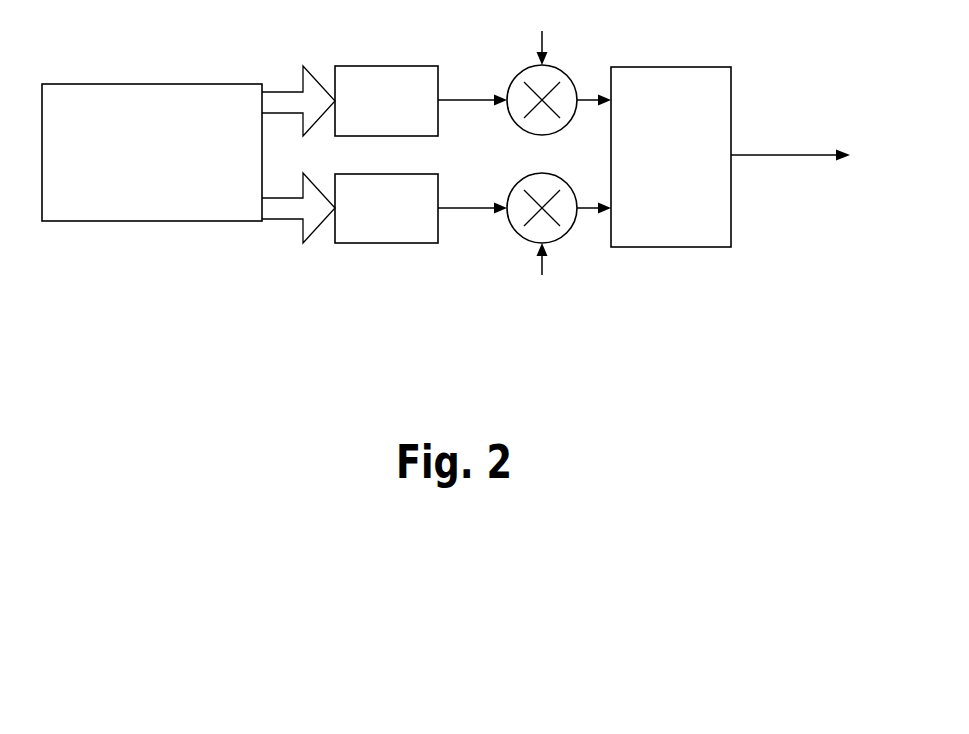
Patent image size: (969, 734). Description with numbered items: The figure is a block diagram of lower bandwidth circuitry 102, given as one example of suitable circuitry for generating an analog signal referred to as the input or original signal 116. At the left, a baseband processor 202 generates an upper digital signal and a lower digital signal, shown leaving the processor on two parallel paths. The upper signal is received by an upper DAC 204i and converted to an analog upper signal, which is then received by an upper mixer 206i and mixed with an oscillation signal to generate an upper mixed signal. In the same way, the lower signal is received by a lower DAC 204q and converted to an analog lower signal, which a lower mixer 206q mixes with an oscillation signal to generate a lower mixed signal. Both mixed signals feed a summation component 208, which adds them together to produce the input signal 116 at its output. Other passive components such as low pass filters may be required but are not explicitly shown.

The lower bandwidth circuitry 102 is at (157, 437).
The baseband processor 202 is at (152, 152).
The upper DAC 204i is at (387, 66).
The lower DAC 204q is at (387, 243).
The upper mixer 206i is at (527, 69).
The lower mixer 206q is at (527, 239).
The summation component 208 is at (670, 67).
The input signal 116 is at (753, 158).